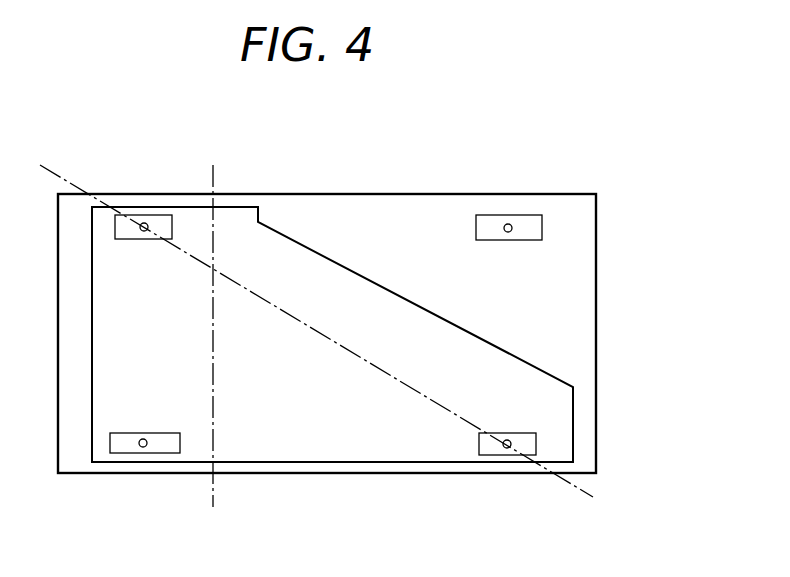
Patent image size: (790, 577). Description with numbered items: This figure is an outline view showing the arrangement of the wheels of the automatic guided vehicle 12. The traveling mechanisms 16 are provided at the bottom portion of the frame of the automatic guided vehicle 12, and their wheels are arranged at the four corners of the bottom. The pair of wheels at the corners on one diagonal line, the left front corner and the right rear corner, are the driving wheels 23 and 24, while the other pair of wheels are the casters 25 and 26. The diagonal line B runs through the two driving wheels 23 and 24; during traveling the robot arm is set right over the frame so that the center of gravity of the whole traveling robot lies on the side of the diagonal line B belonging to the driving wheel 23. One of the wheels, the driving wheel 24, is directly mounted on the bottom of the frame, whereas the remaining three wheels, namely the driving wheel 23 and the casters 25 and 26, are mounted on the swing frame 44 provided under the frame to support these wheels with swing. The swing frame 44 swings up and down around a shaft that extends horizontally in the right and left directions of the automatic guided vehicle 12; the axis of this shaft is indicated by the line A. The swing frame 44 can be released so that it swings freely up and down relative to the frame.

The automatic guided vehicle 12 is at (607, 228).
The traveling mechanism 16 is at (435, 223).
The swing frame 44 is at (400, 448).
The driving wheel 23 is at (127, 450).
The driving wheel 24 is at (523, 220).
The caster 25 is at (129, 222).
The caster 26 is at (520, 448).
The axis of the shaft A is at (213, 490).
The diagonal line B is at (333, 343).